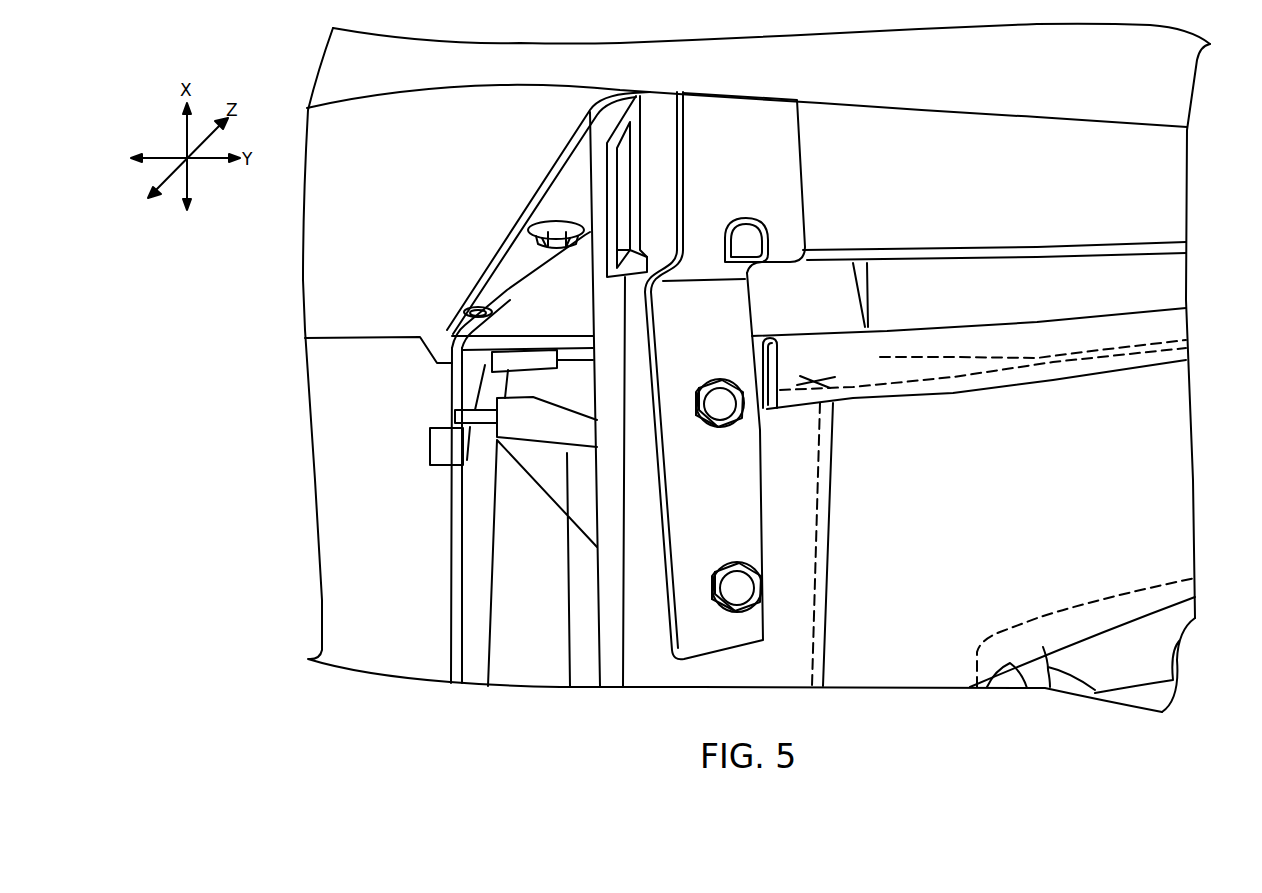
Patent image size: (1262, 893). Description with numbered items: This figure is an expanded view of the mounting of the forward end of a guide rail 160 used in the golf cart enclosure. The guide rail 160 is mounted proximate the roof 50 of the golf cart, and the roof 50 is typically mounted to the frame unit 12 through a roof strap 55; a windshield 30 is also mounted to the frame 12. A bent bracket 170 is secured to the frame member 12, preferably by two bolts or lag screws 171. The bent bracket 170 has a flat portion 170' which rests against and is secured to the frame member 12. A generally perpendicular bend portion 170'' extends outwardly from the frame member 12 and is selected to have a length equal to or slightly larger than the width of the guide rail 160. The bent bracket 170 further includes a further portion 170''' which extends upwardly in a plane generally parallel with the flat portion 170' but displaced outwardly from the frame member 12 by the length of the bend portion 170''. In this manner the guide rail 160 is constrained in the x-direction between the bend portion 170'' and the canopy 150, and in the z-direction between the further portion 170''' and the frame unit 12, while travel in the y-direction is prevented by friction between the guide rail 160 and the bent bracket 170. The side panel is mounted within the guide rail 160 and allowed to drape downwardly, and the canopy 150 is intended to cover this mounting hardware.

The frame 12 is at (632, 660).
The windshield 30 is at (522, 550).
The roof 50 is at (385, 177).
The roof strap 55 is at (493, 280).
The canopy 150 is at (723, 57).
The guide rail 160 is at (1160, 170).
The bent bracket 170 is at (747, 409).
The flat portion 170' is at (701, 454).
The bend portion 170'' is at (743, 261).
The further portion 170''' is at (773, 177).
The bolts or lag screws 171 is at (717, 377).